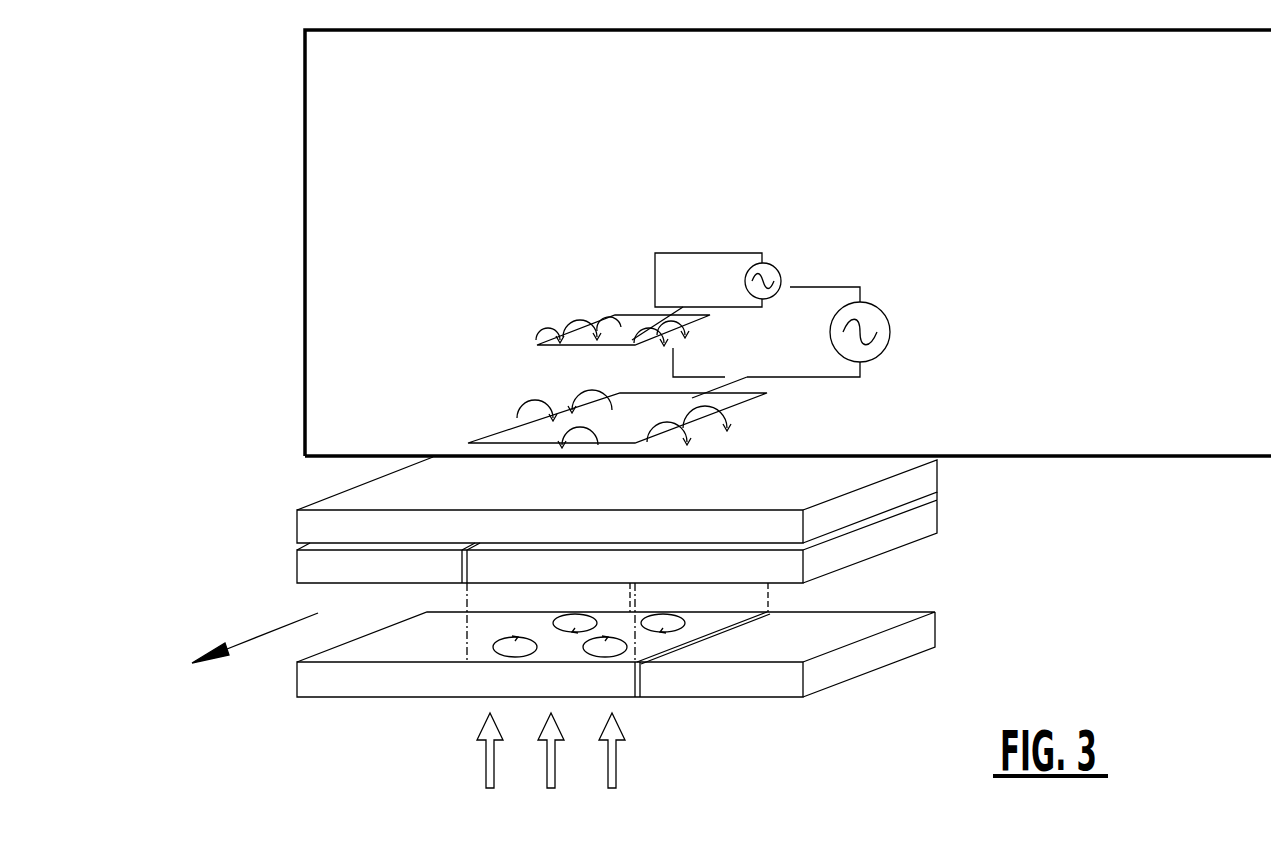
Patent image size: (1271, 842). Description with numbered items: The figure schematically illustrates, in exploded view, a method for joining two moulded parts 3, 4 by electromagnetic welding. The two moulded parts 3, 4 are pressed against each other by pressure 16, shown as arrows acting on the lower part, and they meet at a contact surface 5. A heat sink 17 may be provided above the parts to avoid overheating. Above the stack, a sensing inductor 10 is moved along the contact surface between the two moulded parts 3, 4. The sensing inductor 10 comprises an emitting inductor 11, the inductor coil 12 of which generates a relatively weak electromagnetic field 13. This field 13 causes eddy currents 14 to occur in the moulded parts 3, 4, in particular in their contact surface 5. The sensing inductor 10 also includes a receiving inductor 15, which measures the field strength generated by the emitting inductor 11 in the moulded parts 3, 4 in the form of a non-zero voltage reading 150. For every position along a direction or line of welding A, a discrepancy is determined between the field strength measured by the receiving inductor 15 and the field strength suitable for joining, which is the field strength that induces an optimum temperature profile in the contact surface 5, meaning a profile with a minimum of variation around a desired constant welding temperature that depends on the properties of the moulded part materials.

The sensing inductor 10 is at (305, 190).
The receiving inductor 15 is at (608, 251).
The non-zero voltage reading 150 is at (775, 271).
The emitting inductor 11 is at (920, 316).
The inductor coil 12 is at (750, 403).
The electromagnetic field 13 is at (703, 430).
The heat sink 17 is at (912, 482).
The moulded part 3 is at (877, 540).
The contact surface 5 is at (525, 583).
The moulded part 4 is at (325, 683).
The eddy currents 14 is at (693, 622).
The pressure 16 is at (617, 758).
The direction or line of welding A is at (263, 633).